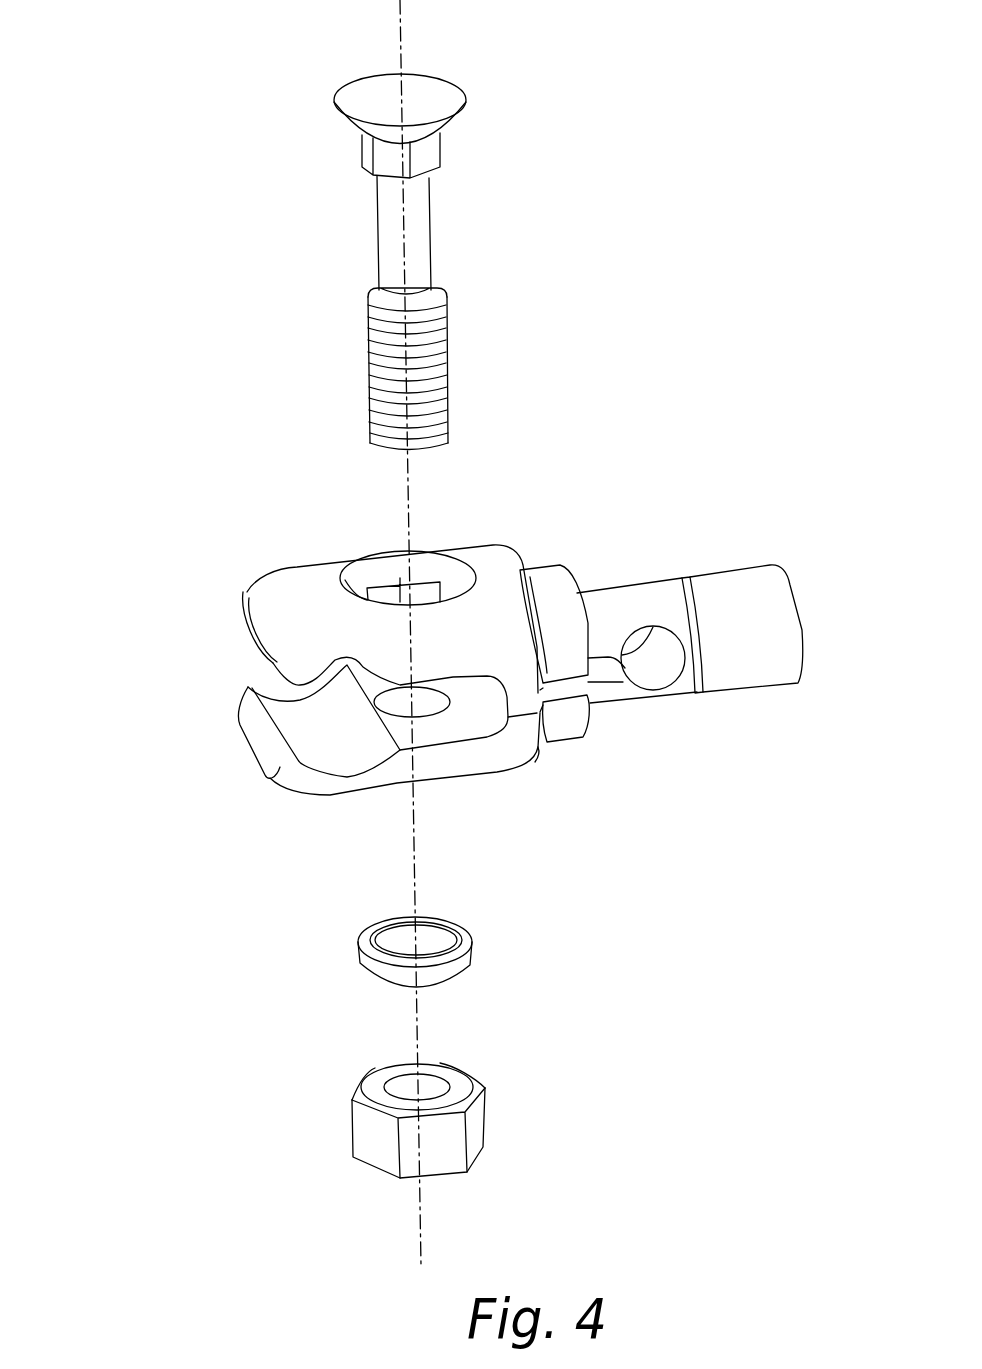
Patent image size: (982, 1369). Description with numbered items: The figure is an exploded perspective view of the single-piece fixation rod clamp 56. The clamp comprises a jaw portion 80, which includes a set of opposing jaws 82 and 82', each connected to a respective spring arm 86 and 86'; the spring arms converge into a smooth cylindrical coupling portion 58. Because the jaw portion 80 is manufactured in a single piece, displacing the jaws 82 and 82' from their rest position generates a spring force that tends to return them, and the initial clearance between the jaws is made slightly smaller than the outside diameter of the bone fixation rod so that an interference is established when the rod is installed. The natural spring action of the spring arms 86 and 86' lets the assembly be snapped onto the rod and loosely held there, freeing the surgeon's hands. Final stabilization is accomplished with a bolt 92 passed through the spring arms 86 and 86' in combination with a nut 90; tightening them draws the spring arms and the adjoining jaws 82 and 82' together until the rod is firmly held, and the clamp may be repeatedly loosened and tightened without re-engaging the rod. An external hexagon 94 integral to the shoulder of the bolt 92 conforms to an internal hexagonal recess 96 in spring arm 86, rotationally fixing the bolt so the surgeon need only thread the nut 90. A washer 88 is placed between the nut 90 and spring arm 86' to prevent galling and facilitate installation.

The single-piece fixation rod clamp 56 is at (465, 552).
The cylindrical coupling portion 58 is at (758, 540).
The jaw portion 80 is at (311, 591).
The jaw 82 is at (329, 621).
The jaw 82' is at (341, 736).
The spring arm 86 is at (554, 561).
The spring arm 86' is at (562, 789).
The washer 88 is at (360, 961).
The nut 90 is at (372, 1143).
The bolt 92 is at (450, 262).
The external hexagon 94 is at (367, 152).
The internal hexagonal recess 96 is at (390, 590).